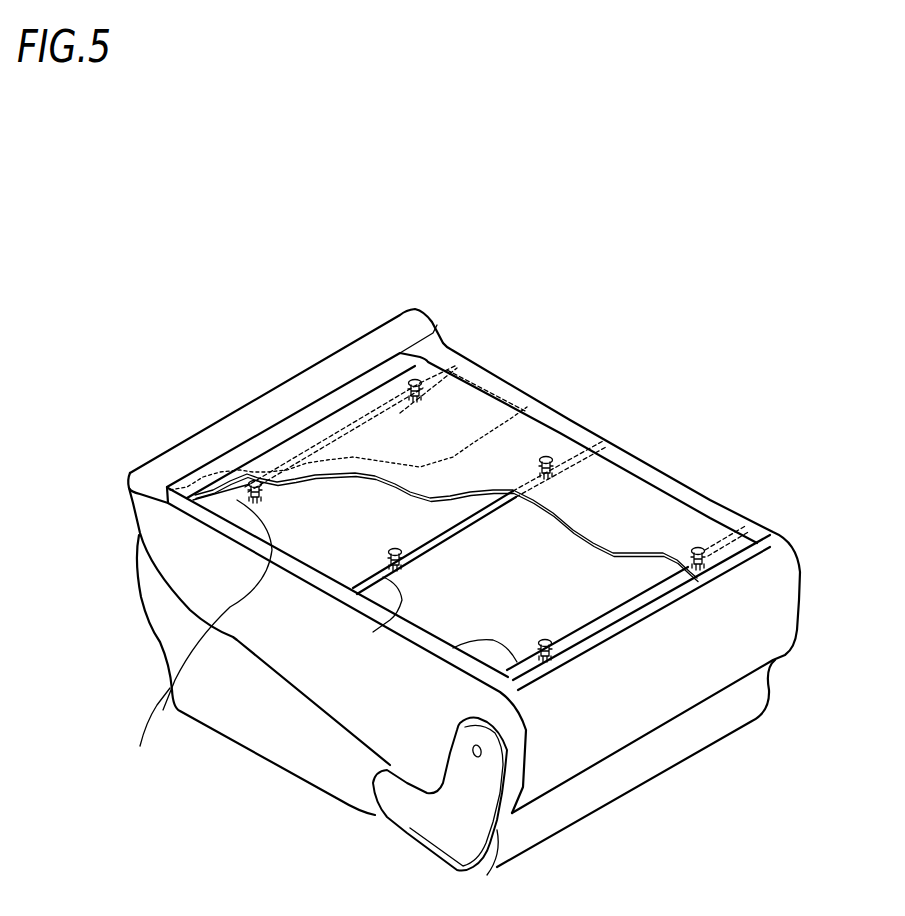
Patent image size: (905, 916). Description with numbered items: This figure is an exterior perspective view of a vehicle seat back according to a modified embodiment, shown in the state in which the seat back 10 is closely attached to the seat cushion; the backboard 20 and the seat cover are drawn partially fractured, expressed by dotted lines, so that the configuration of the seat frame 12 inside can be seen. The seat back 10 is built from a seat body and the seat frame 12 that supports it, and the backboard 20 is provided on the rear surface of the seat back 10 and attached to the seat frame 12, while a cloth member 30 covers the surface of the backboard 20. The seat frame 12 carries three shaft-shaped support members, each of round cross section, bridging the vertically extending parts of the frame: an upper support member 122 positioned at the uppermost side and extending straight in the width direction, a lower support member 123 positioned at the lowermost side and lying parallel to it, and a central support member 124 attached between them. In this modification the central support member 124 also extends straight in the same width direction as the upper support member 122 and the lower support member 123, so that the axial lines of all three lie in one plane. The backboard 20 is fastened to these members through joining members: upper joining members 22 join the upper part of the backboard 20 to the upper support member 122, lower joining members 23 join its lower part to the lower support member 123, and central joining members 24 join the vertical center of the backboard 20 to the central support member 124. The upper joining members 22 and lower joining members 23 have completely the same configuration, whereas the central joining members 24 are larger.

The seat back 10 is at (199, 398).
The seat frame 12 is at (305, 880).
The backboard 20 is at (603, 550).
The upper joining members 22 is at (252, 481).
The lower joining members 23 is at (703, 560).
The central joining members 24 is at (397, 551).
The cloth member 30 is at (482, 380).
The upper support member 122 is at (142, 733).
The lower support member 123 is at (453, 648).
The central support member 124 is at (373, 632).